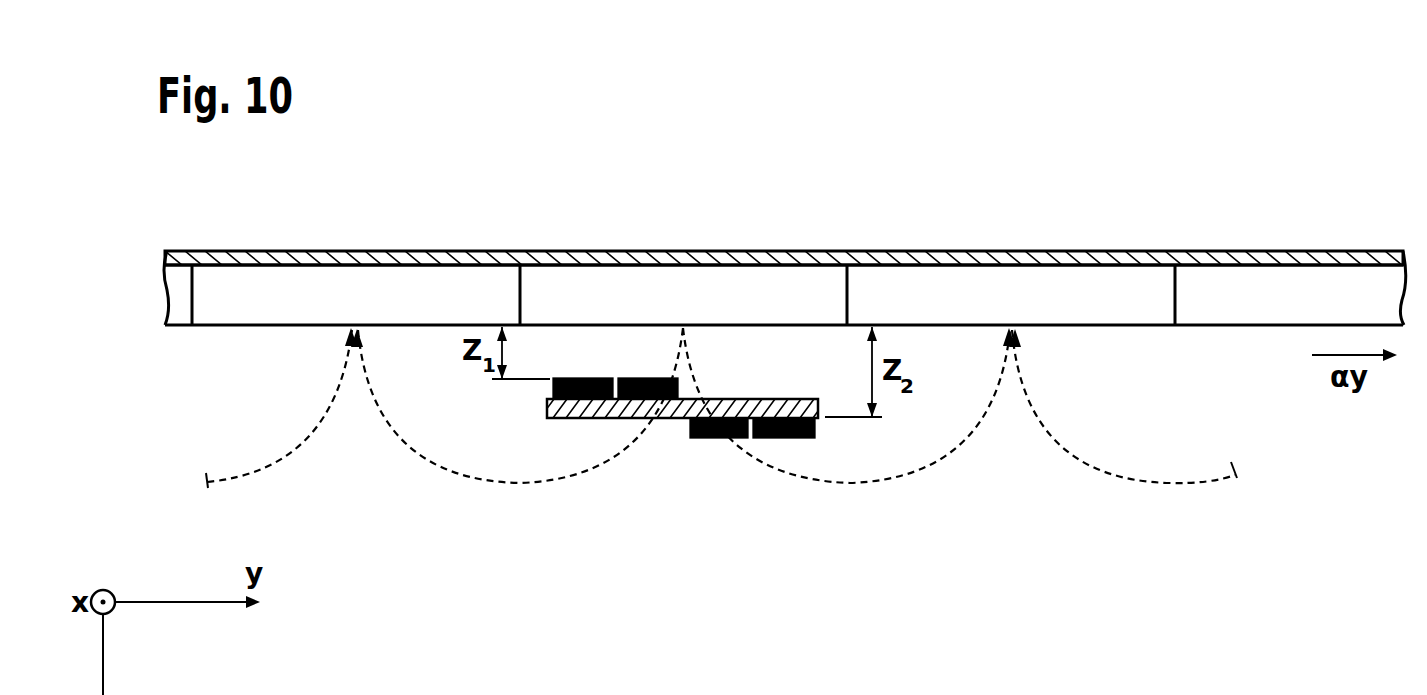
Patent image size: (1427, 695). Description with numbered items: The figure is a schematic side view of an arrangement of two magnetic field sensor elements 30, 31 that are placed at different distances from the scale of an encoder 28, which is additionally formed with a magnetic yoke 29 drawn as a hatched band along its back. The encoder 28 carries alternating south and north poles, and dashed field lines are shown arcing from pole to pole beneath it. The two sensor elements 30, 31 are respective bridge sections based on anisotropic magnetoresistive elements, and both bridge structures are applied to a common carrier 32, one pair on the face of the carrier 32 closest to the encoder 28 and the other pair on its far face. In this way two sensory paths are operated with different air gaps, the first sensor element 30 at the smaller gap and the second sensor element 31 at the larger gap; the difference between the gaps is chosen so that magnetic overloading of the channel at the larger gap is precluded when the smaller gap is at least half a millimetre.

The encoder 28 is at (285, 282).
The magnetic yoke 29 is at (751, 258).
The magnetic field sensor element 30 is at (643, 418).
The magnetic field sensor element 31 is at (778, 439).
The carrier 32 is at (562, 420).